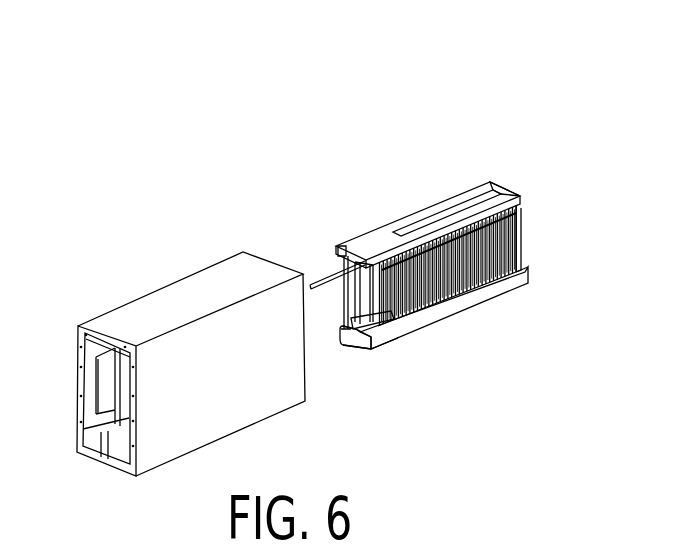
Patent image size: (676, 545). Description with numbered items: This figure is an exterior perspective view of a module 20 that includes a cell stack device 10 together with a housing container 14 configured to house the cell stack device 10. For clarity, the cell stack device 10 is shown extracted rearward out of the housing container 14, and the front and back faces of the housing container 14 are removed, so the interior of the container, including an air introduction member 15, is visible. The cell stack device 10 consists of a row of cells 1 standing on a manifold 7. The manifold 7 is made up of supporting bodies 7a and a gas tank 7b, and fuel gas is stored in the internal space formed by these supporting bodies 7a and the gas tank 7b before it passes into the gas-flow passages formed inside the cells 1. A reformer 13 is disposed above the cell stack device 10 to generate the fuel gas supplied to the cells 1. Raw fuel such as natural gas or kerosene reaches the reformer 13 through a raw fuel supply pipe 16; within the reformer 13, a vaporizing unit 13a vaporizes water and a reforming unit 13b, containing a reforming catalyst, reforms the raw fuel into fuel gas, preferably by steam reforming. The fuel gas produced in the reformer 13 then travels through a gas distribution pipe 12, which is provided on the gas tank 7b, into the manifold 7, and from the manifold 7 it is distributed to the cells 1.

The cell 1 is at (525, 212).
The manifold 7 is at (431, 380).
The supporting body 7a is at (388, 336).
The gas tank 7b is at (365, 348).
The cell stack device 10 is at (457, 186).
The gas distribution pipe 12 is at (340, 265).
The reformer 13 is at (440, 173).
The vaporizing unit 13a is at (408, 233).
The reforming unit 13b is at (498, 192).
The housing container 14 is at (217, 273).
The air introduction member 15 is at (118, 373).
The raw fuel supply pipe 16 is at (311, 285).
The module 20 is at (155, 102).